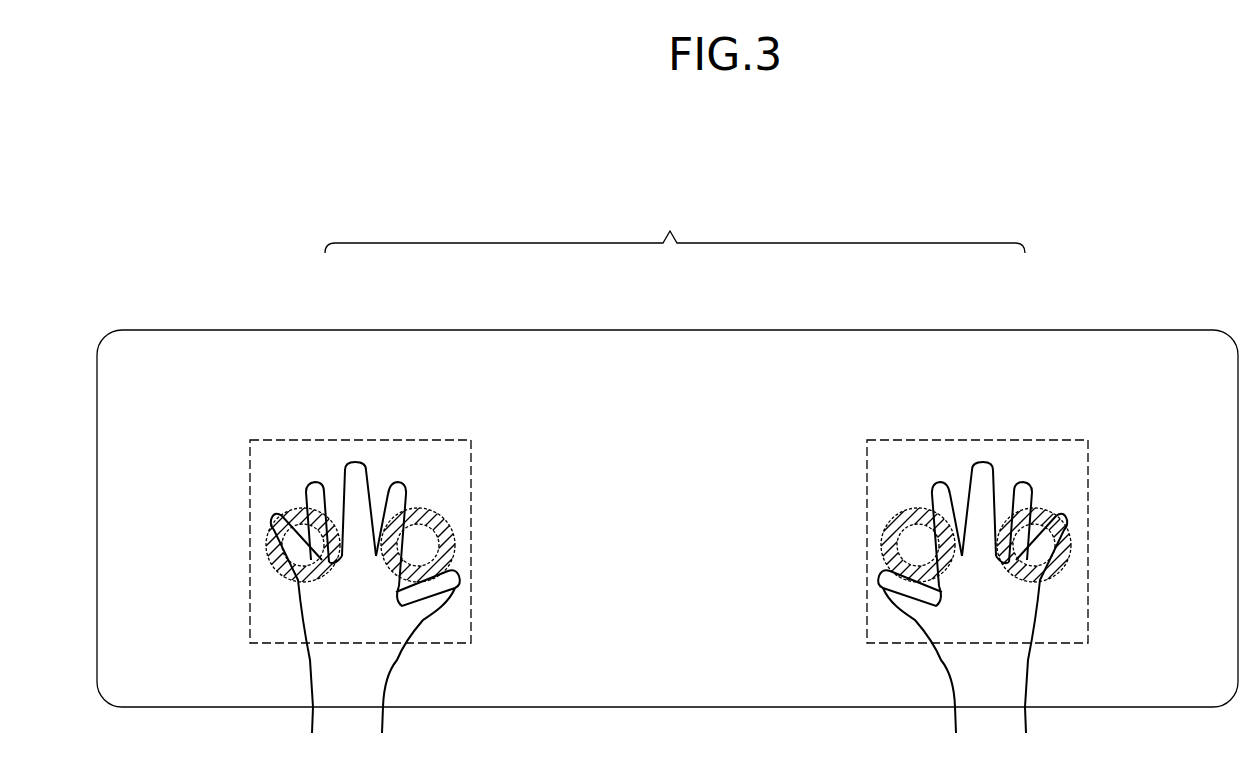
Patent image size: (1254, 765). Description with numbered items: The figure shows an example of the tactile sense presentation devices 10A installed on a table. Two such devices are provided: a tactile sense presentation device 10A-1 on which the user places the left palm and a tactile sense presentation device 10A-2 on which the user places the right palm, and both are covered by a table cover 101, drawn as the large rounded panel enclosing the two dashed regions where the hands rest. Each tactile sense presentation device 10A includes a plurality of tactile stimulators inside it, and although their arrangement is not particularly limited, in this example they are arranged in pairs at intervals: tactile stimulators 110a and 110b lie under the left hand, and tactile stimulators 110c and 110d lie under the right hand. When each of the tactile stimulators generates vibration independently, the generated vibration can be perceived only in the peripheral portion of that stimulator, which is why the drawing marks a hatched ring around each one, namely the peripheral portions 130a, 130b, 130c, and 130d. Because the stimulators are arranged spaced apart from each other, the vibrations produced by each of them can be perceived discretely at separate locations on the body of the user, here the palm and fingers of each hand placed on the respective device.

The table cover 101 is at (1157, 348).
The tactile sense presentation device 10A is at (675, 228).
The tactile sense presentation device 10A-1 is at (355, 440).
The tactile sense presentation device 10A-2 is at (975, 440).
The tactile stimulator 110a is at (298, 506).
The tactile stimulator 110b is at (432, 506).
The tactile stimulator 110c is at (917, 506).
The tactile stimulator 110d is at (1050, 506).
The peripheral portion 130a is at (256, 545).
The peripheral portion 130b is at (465, 545).
The peripheral portion 130c is at (872, 545).
The peripheral portion 130d is at (1082, 545).